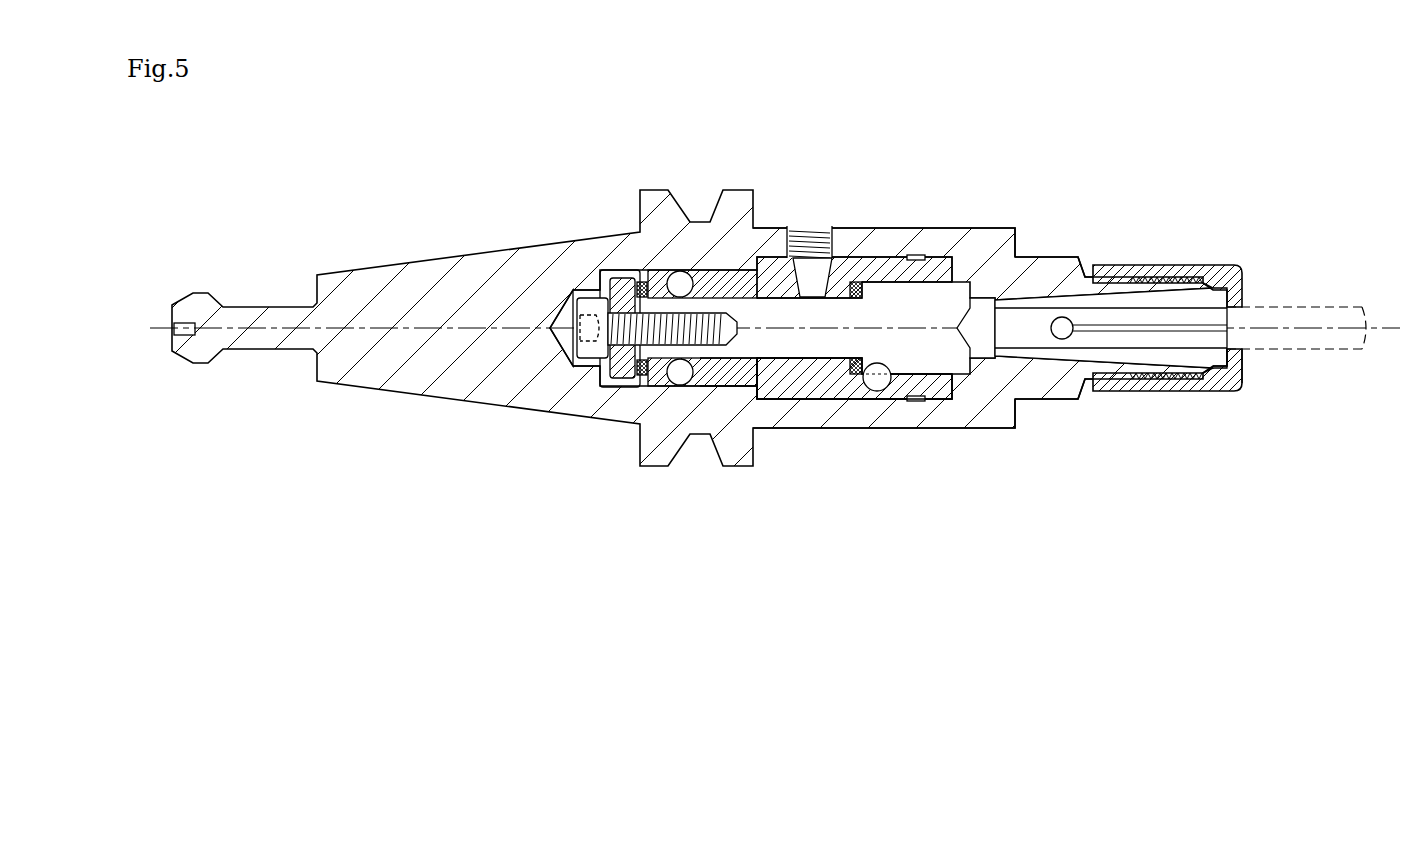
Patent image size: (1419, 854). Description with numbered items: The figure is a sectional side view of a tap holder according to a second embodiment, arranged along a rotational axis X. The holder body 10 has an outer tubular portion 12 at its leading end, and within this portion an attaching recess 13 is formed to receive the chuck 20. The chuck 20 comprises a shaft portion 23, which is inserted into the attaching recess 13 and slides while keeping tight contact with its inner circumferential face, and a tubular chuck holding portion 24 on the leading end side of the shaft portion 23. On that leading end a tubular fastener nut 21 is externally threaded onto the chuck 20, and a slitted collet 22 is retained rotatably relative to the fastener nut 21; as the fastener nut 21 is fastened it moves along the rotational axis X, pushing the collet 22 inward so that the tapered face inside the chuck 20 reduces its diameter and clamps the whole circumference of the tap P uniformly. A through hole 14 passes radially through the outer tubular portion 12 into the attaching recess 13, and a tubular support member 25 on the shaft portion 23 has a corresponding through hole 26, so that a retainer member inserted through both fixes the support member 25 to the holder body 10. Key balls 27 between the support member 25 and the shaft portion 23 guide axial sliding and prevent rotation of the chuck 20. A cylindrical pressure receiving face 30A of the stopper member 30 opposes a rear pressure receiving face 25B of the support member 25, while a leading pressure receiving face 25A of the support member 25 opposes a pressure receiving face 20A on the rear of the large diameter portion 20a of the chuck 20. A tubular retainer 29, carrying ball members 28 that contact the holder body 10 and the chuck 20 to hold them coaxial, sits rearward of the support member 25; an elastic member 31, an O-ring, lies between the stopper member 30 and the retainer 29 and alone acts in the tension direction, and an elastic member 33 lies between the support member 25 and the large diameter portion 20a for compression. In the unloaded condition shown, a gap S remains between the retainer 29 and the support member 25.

The holder body 10 is at (455, 250).
The outer tubular portion 12 is at (1002, 232).
The attaching recess 13 is at (596, 386).
The through hole 14 is at (808, 226).
The chuck 20 is at (1062, 250).
The pressure receiving face 20A is at (856, 284).
The large diameter portion 20a is at (877, 287).
The fastener nut 21 is at (1237, 281).
The collet 22 is at (1238, 357).
The shaft portion 23 is at (776, 340).
The chuck holding portion 24 is at (1114, 285).
The support member 25 is at (907, 257).
The pressure receiving face 25A is at (800, 378).
The pressure receiving face 25B is at (746, 278).
The through hole 26 is at (826, 275).
The key balls 27 is at (856, 376).
The ball members 28 is at (665, 384).
The retainer 29 is at (718, 382).
The stopper member 30 is at (611, 288).
The pressure receiving face 30A is at (611, 266).
The elastic member 31 is at (641, 383).
The elastic member 33 is at (861, 365).
The gap S is at (752, 392).
The rotational axis X is at (250, 312).
The tap P is at (1339, 307).